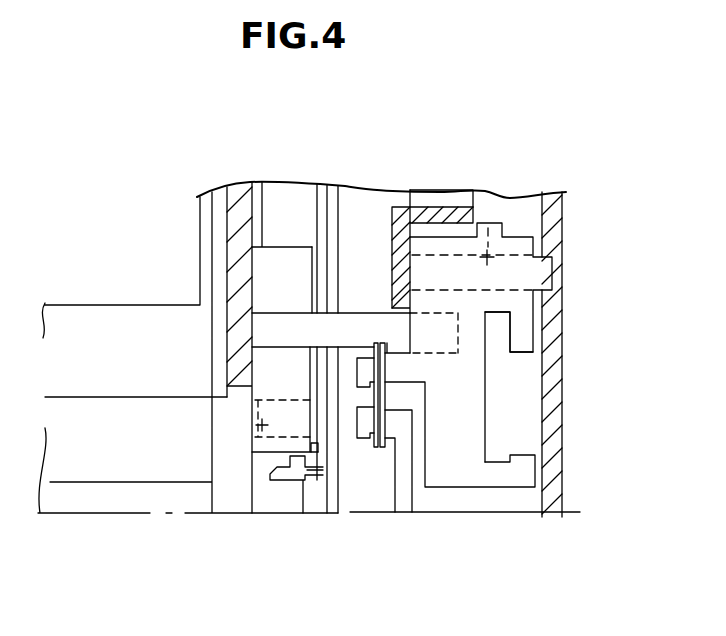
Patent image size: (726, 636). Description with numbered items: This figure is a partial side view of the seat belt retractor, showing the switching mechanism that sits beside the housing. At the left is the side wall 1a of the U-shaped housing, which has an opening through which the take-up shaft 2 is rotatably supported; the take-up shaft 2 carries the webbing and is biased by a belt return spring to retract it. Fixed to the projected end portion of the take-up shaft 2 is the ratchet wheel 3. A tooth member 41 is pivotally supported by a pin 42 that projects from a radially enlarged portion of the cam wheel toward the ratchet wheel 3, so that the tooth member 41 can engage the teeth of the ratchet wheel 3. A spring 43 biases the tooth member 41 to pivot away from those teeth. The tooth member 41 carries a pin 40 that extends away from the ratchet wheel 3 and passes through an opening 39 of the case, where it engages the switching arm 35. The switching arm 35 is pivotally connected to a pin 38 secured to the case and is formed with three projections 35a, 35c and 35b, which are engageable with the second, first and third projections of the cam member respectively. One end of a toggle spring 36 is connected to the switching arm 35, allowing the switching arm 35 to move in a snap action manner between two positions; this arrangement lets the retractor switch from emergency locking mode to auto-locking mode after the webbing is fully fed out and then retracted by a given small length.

The side wall 1a is at (238, 193).
The take-up shaft 2 is at (80, 412).
The ratchet wheel 3 is at (275, 193).
The switching arm 35 is at (490, 223).
The projection 35a is at (503, 223).
The projection 35b is at (522, 460).
The projection 35c is at (525, 340).
The toggle spring 36 is at (393, 400).
The pin 38 is at (543, 283).
The opening 39 is at (410, 315).
The pin 40 is at (357, 318).
The tooth member 41 is at (285, 255).
The pin 42 is at (256, 420).
The spring 43 is at (303, 463).